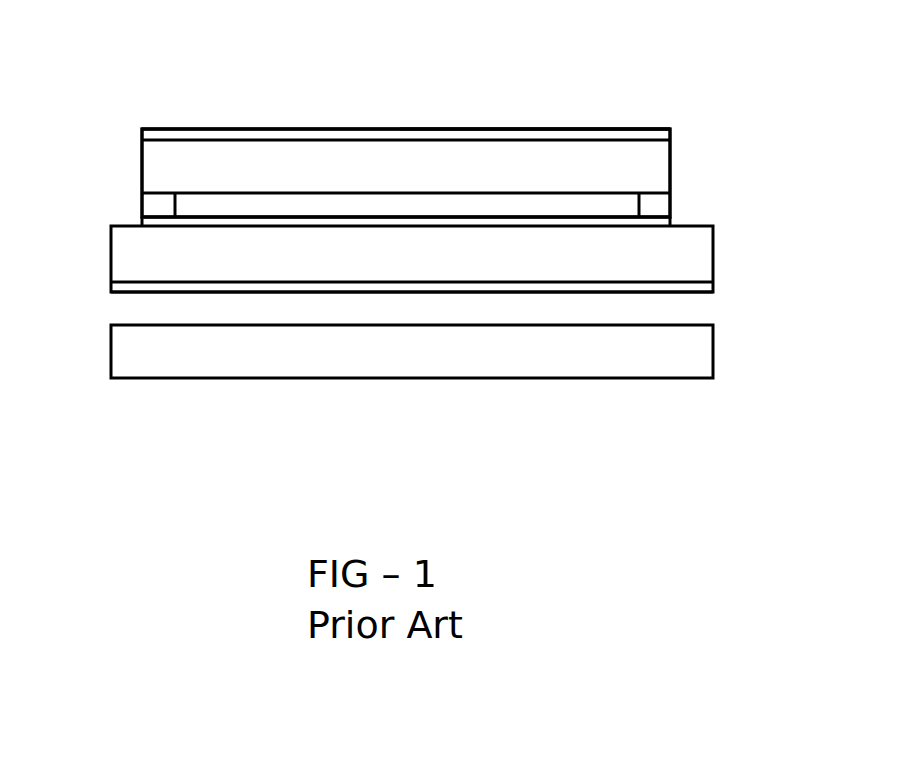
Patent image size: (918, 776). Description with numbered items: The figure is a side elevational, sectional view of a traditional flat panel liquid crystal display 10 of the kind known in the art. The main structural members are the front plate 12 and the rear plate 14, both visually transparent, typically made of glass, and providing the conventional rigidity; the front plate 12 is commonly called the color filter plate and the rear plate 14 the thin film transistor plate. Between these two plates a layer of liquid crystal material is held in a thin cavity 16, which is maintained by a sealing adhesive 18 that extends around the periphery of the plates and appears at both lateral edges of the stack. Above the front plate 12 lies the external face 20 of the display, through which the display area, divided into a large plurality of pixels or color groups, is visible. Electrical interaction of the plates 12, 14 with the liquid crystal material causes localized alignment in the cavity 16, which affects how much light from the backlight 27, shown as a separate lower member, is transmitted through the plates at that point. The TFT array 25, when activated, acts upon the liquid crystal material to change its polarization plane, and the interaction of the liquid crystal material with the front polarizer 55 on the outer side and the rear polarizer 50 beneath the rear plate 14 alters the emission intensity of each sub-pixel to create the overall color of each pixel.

The liquid crystal display 10 is at (577, 84).
The front plate 12 is at (406, 173).
The rear plate 14 is at (412, 259).
The cavity 16 is at (207, 206).
The sealing adhesive 18 is at (150, 202).
The external face 20 is at (327, 130).
The TFT array 25 is at (152, 223).
The backlight 27 is at (412, 351).
The rear polarizer 50 is at (698, 283).
The front polarizer 55 is at (655, 128).